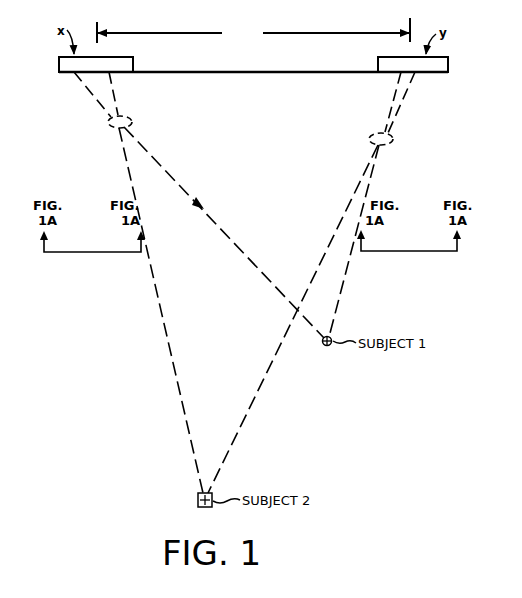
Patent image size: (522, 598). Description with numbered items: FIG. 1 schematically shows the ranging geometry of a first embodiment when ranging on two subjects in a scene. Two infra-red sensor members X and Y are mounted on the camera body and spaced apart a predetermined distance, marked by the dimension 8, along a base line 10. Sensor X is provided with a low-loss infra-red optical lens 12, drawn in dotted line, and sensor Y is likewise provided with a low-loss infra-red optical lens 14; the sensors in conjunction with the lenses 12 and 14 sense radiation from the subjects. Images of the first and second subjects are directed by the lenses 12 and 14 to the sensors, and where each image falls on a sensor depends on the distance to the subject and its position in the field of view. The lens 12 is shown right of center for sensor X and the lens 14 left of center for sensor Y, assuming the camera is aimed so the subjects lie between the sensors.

The baseline distance between cameras 8 is at (253, 30).
The base line 10 is at (286, 72).
The infra-red optical lens 12 is at (132, 121).
The infra-red optical lens 14 is at (393, 139).